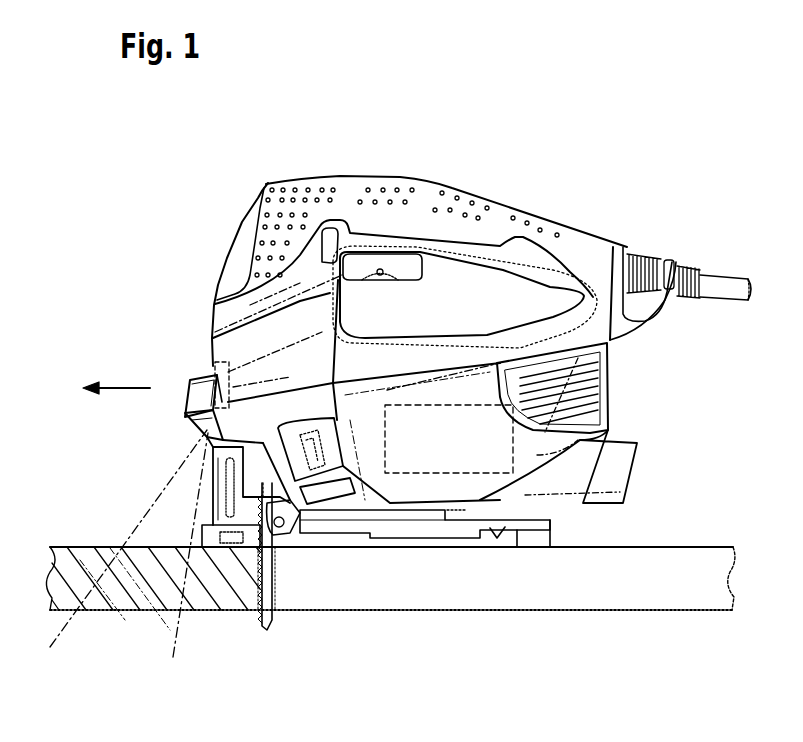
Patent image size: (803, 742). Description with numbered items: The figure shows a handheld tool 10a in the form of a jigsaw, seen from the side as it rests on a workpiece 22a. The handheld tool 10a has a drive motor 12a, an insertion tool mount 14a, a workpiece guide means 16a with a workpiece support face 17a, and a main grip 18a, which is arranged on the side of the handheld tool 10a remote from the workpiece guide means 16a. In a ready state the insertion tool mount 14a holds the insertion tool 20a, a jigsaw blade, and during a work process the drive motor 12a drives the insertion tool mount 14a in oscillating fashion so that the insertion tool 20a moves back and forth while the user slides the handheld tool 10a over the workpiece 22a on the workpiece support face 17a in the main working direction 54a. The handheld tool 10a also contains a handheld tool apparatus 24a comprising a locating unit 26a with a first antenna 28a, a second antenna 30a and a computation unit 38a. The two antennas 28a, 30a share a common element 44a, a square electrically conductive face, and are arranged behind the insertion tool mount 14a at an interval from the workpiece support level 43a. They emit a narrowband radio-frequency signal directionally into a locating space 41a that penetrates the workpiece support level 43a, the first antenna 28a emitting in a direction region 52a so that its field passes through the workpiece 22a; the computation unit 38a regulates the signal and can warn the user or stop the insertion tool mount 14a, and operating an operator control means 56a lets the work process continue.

The handheld tool 10a is at (555, 171).
The drive motor 12a is at (540, 473).
The insertion tool mount 14a is at (280, 520).
The workpiece guide means 16a is at (440, 540).
The workpiece support face 17a is at (497, 550).
The main grip 18a is at (463, 183).
The insertion tool 20a is at (267, 613).
The workpiece 22a is at (222, 585).
The handheld tool apparatus 24a is at (183, 392).
The locating unit 26a is at (173, 346).
The first antenna 28a is at (190, 432).
The second antenna 30a is at (159, 413).
The computation unit 38a is at (200, 347).
The locating space 41a is at (118, 628).
The workpiece support level 43a is at (102, 546).
The common element 44a is at (207, 433).
The direction region 52a is at (170, 523).
The main working direction 54a is at (117, 387).
The operator control means 56a is at (408, 272).